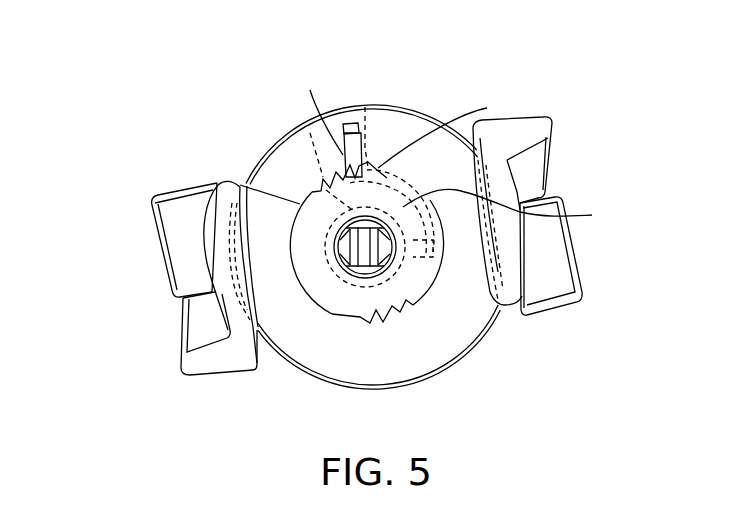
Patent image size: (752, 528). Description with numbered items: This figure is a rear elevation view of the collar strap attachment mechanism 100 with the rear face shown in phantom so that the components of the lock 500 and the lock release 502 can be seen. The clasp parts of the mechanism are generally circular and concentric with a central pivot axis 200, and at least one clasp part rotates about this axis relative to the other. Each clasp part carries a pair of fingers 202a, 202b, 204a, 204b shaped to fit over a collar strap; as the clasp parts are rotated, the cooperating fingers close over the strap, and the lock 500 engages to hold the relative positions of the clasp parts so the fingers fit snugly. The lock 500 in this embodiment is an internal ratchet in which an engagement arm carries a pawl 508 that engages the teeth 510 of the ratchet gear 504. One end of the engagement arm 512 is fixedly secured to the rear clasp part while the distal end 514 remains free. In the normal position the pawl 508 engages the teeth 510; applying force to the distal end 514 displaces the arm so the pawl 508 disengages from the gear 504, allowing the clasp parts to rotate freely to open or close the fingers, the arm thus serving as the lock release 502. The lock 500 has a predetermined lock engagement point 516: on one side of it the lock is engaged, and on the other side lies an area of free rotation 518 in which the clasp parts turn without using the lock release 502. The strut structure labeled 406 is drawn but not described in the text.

The collar strap attachment mechanism 100 is at (149, 102).
The pivot axis 200 is at (361, 278).
The finger 202a is at (180, 240).
The finger 202b is at (556, 269).
The finger 204a is at (228, 367).
The finger 204b is at (517, 130).
The clamp arm 406 is at (222, 317).
The lock 500 is at (372, 148).
The lock release 502 is at (360, 123).
The ratchet gear 504 is at (320, 352).
The pawl 508 is at (453, 128).
The teeth 510 is at (313, 111).
The end of the engagement arm 512 is at (415, 248).
The distal end 514 is at (349, 122).
The lock engagement point 516 is at (312, 192).
The area of free rotation 518 is at (240, 183).